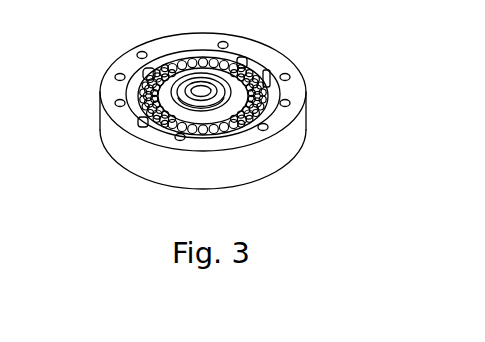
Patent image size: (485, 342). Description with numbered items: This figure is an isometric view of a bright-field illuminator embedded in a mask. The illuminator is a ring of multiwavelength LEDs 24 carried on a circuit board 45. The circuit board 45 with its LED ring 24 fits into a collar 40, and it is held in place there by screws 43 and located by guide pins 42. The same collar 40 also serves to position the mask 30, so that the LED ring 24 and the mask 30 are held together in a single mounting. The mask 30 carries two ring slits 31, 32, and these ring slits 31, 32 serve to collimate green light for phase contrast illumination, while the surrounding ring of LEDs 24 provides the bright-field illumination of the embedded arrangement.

The ring of multiwavelength LEDs 24 is at (180, 130).
The mask 30 is at (218, 120).
The ring slit 31 is at (213, 73).
The ring slit 32 is at (268, 83).
The collar 40 is at (293, 140).
The guide pins 42 is at (140, 112).
The screws 43 is at (147, 72).
The circuit board 45 is at (266, 68).